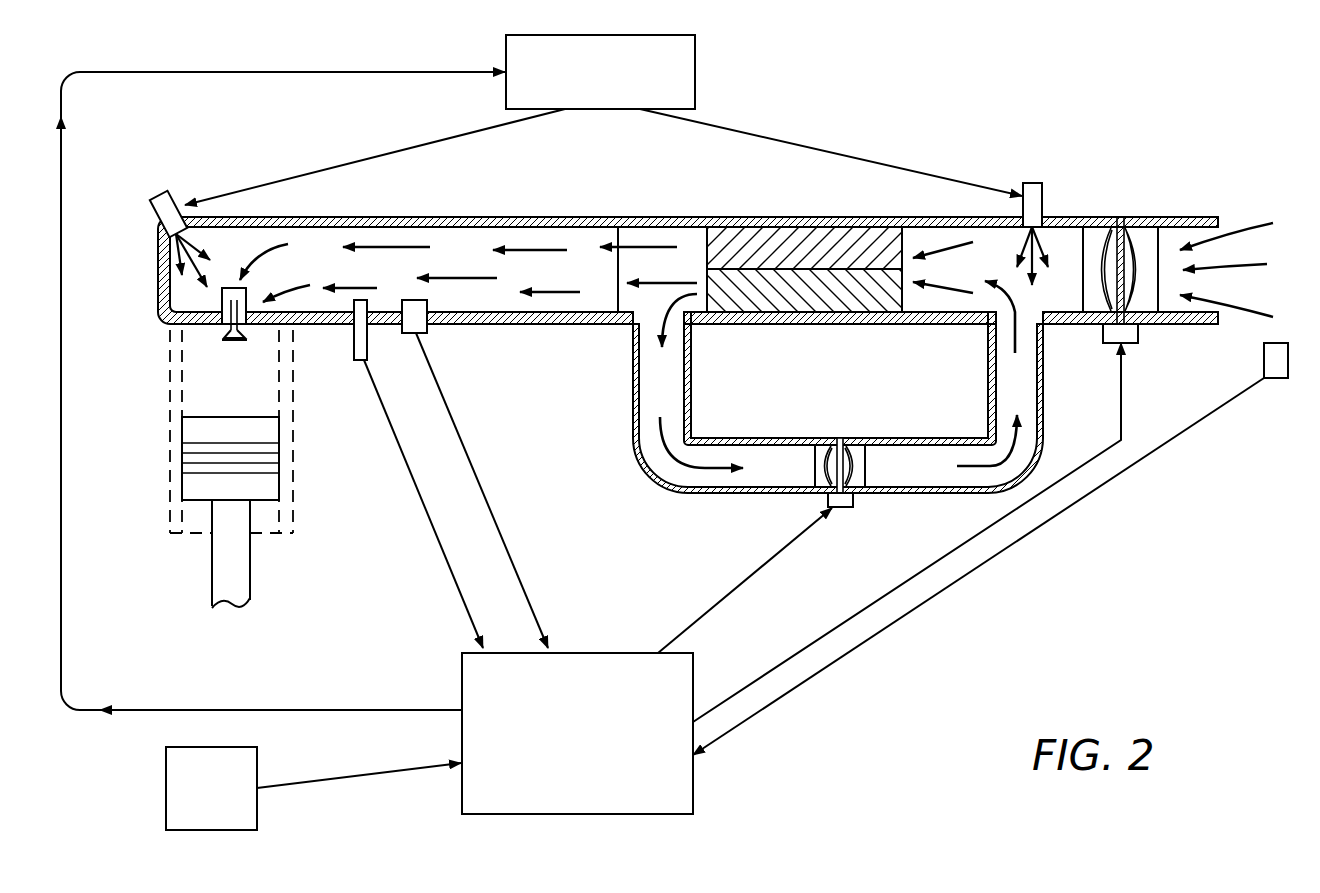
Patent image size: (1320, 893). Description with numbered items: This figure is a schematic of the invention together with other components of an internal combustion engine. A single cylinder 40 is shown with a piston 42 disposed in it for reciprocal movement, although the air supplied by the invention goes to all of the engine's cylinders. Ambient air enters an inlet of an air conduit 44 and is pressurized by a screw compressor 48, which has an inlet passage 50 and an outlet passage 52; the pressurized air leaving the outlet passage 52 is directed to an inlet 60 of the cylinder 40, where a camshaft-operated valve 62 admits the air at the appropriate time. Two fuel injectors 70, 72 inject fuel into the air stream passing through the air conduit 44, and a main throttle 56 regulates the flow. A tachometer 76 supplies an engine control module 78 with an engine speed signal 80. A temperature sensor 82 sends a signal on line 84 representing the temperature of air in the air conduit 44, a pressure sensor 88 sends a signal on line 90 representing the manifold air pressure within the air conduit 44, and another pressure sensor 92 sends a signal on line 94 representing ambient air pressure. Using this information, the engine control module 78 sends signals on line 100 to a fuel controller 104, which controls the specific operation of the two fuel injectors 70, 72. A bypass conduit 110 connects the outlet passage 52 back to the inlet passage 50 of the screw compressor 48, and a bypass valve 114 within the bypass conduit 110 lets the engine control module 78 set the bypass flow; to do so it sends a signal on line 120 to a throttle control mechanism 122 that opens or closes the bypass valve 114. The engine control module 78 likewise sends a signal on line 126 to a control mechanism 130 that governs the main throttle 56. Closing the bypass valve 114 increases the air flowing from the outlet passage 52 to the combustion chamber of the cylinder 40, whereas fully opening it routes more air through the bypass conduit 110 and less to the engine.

The cylinder 40 is at (197, 392).
The piston 42 is at (272, 485).
The air conduit 44 is at (463, 245).
The screw compressor 48 is at (770, 250).
The inlet passage 50 is at (912, 242).
The outlet passage 52 is at (705, 240).
The main throttle 56 is at (1132, 250).
The inlet 60 is at (222, 330).
The valve 62 is at (237, 343).
The fuel injector 70 is at (1042, 196).
The fuel injector 72 is at (160, 196).
The tachometer 76 is at (257, 812).
The engine control module 78 is at (632, 815).
The engine speed signal 80 is at (383, 773).
The temperature sensor 82 is at (352, 340).
The line 84 is at (418, 497).
The pressure sensor 88 is at (427, 322).
The line 90 is at (465, 452).
The pressure sensor 92 is at (1278, 380).
The line 94 is at (905, 618).
The line 100 is at (61, 637).
The fuel controller 104 is at (697, 65).
The bypass conduit 110 is at (733, 440).
The bypass valve 114 is at (858, 447).
The line 120 is at (736, 588).
The throttle control mechanism 122 is at (847, 507).
The line 126 is at (1121, 385).
The control mechanism 130 is at (1138, 334).